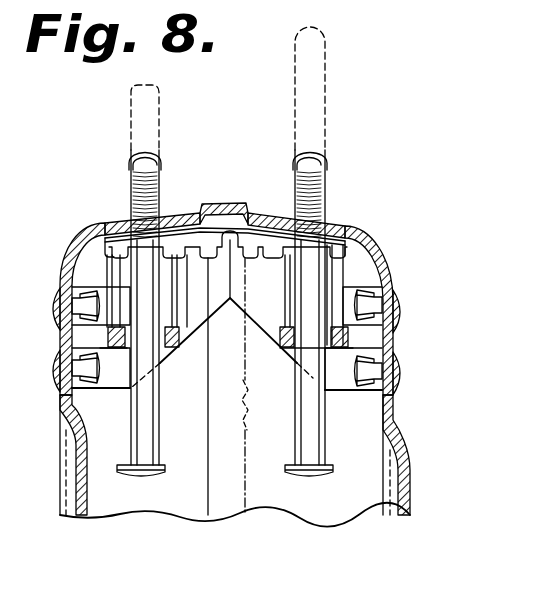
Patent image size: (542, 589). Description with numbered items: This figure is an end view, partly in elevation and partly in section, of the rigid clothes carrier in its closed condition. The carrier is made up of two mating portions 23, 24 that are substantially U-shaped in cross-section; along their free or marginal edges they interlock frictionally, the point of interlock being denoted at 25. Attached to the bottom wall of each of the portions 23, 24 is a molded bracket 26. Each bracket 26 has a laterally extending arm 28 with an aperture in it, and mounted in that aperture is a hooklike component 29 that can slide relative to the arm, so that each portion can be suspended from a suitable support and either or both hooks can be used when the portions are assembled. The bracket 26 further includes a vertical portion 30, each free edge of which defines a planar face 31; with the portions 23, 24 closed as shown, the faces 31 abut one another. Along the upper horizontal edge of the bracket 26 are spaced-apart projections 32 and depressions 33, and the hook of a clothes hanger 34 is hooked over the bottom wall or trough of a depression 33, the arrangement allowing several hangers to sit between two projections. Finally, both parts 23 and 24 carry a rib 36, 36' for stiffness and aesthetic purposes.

The mating portion 23 is at (84, 238).
The mating portion 24 is at (369, 238).
The frictional interlock 25 is at (241, 206).
The molded bracket 26 is at (380, 338).
The laterally extending arm 28 is at (279, 332).
The hooklike component 29 is at (137, 418).
The vertical portion 30 is at (189, 347).
The planar face 31 is at (229, 272).
The projection 32 is at (196, 222).
The depression 33 is at (173, 242).
The clothes hanger 34 is at (246, 394).
The rib 36 is at (421, 455).
The rib 36' is at (46, 455).